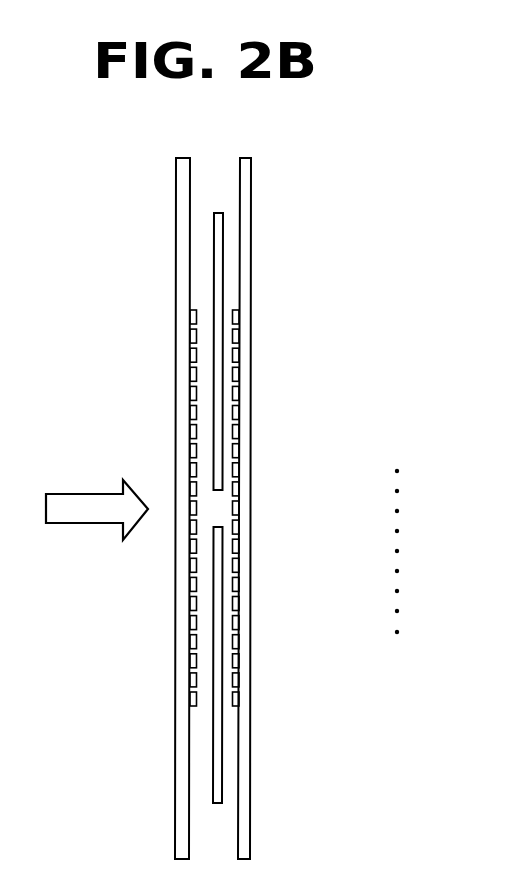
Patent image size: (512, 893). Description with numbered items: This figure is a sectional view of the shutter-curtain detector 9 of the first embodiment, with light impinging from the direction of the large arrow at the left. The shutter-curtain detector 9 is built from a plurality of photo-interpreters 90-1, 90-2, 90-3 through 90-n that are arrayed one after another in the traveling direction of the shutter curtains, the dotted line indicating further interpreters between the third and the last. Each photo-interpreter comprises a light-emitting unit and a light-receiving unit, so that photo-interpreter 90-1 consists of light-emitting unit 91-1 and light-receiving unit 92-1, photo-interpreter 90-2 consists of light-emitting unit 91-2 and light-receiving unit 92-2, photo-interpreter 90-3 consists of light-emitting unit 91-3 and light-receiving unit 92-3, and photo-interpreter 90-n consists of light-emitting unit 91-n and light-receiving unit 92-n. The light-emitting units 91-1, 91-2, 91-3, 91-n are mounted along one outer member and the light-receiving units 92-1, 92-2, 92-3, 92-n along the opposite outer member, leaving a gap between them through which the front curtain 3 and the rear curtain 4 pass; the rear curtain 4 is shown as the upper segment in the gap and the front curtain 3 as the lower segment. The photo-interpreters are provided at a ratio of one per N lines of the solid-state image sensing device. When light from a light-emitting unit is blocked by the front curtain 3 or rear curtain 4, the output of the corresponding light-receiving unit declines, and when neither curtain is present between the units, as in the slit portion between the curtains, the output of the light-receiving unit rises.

The front curtain 3 is at (212, 746).
The rear curtain 4 is at (213, 268).
The shutter-curtain detector 9 is at (175, 818).
The photo-interpreter 90-1 is at (306, 298).
The photo-interpreter 90-2 is at (349, 359).
The photo-interpreter 90-3 is at (306, 403).
The photo-interpreter 90-n is at (307, 681).
The light-emitting unit 91-1 is at (193, 316).
The light-emitting unit 91-2 is at (194, 333).
The light-emitting unit 91-3 is at (194, 355).
The light-emitting unit 91-n is at (194, 700).
The light-receiving unit 92-1 is at (238, 314).
The light-receiving unit 92-2 is at (238, 339).
The light-receiving unit 92-3 is at (238, 355).
The light-receiving unit 92-n is at (238, 698).